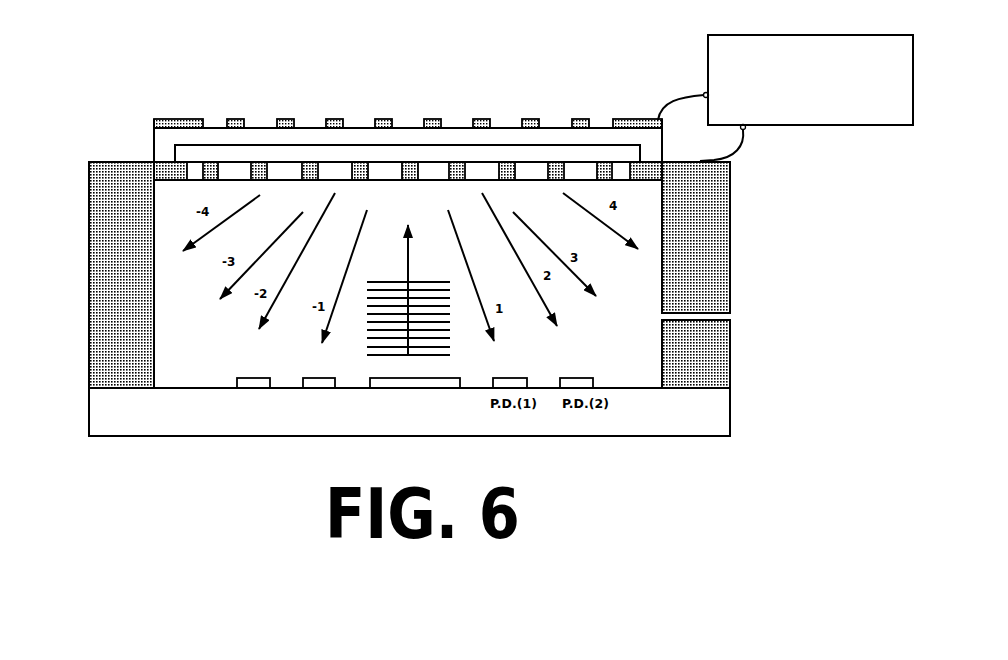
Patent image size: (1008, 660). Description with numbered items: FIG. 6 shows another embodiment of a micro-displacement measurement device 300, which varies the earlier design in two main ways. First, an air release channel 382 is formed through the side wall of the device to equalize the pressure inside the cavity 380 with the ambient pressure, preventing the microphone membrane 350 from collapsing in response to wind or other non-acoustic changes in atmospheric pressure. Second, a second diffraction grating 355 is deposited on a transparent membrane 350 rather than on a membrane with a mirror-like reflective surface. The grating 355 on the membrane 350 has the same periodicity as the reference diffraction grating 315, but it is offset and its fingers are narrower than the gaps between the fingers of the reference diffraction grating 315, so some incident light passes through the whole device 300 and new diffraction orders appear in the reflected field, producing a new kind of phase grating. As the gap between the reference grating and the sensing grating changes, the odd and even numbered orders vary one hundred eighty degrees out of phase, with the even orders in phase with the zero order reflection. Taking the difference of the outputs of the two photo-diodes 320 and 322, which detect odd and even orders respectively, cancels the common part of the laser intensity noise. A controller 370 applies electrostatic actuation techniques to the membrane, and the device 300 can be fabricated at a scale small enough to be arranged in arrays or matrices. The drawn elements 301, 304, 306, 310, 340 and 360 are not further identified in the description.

The micro-displacement measurement device 300 is at (465, 52).
The incident light beam 301 is at (409, 275).
The -1 order diffracted light 304 is at (349, 262).
The -2 order diffracted light 306 is at (301, 258).
The side wall 310 is at (730, 250).
The reference diffraction grating 315 is at (208, 188).
The photo-diode 320 is at (337, 389).
The photo-diode 322 is at (255, 378).
The central photodetector 340 is at (419, 390).
The transparent membrane 350 is at (597, 128).
The second diffraction grating 355 is at (385, 119).
The substrate 360 is at (726, 424).
The controller 370 is at (905, 120).
The cavity 380 is at (176, 300).
The air release channel 382 is at (768, 311).